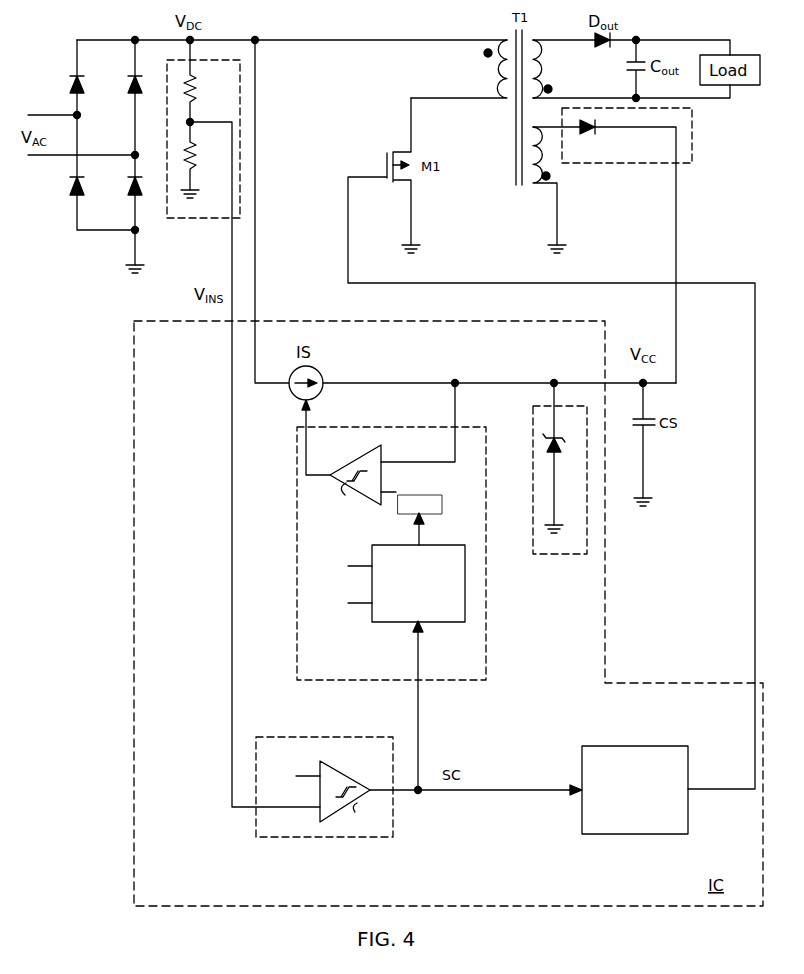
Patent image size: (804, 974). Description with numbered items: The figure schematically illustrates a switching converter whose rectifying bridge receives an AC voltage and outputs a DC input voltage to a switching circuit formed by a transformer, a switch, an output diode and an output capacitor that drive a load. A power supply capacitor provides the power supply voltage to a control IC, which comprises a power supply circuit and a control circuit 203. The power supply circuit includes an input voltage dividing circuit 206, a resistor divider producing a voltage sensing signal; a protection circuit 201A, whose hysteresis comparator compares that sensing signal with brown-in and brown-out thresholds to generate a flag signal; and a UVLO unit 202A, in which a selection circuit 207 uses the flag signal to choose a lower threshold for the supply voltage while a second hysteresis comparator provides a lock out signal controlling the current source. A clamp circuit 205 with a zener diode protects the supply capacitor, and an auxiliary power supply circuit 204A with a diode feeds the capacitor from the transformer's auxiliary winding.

The input voltage dividing circuit 206 is at (220, 218).
The auxiliary power supply circuit 204A is at (648, 163).
The clamp circuit 205 is at (563, 554).
The UVLO unit 202A is at (373, 550).
The selection circuit 207 is at (394, 622).
The protection circuit 201A is at (330, 837).
The control circuit 203 is at (615, 834).